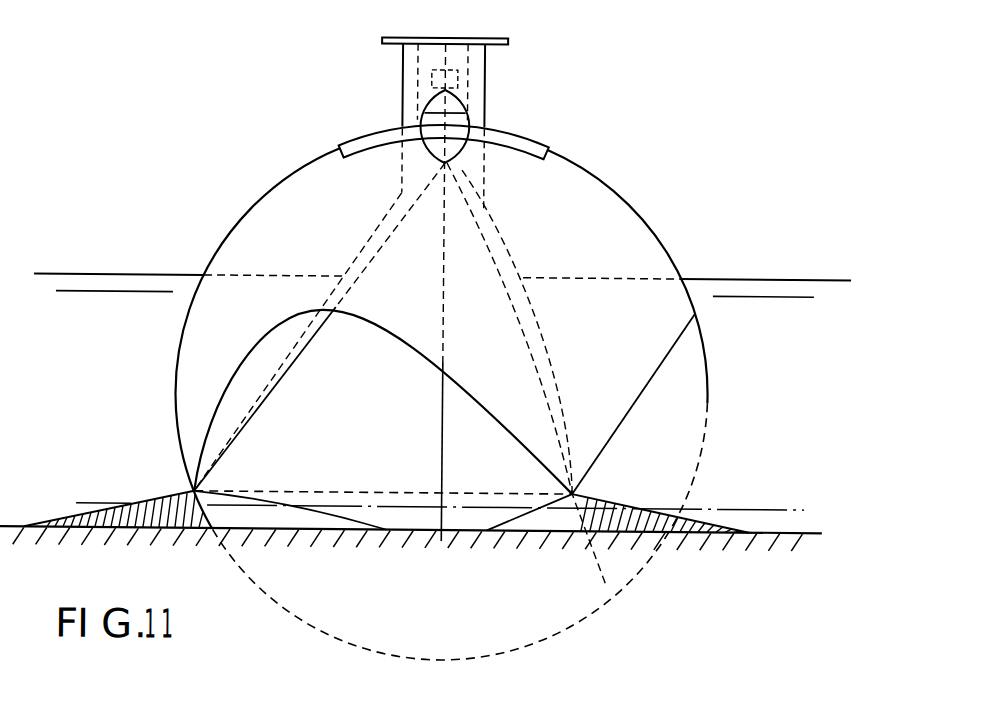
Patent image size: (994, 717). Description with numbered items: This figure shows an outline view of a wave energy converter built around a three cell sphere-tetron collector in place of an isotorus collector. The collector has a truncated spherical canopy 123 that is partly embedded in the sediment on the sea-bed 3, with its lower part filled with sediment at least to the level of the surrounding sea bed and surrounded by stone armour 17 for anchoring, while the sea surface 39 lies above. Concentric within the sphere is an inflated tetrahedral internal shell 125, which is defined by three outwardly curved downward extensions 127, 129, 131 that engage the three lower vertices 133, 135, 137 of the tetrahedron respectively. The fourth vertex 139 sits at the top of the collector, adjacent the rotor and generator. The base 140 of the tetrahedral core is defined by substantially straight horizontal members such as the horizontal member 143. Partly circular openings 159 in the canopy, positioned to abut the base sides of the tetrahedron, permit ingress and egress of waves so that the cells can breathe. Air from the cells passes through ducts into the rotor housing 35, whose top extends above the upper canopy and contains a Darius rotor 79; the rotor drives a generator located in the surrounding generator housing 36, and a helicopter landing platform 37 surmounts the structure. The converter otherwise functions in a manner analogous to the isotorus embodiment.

The sea-bed 3 is at (762, 530).
The stone armour 17 is at (132, 506).
The rotor housing 35 is at (483, 119).
The generator housing 36 is at (483, 82).
The helicopter landing platform 37 is at (503, 41).
The sea surface 39 is at (727, 278).
The Darius rotor 79 is at (423, 109).
The truncated spherical canopy 123 is at (611, 184).
The inflated tetrahedral internal shell 125 is at (388, 268).
The outwardly curved downward extension 127 is at (441, 433).
The outwardly curved downward extension 129 is at (290, 357).
The outwardly curved downward extension 131 is at (520, 344).
The lower vertex 133 is at (447, 491).
The lower vertex 135 is at (200, 490).
The lower vertex 137 is at (577, 494).
The fourth vertex 139 is at (453, 137).
The base of the tetrahedral core 140 is at (484, 497).
The substantially straight horizontal member 143 is at (390, 497).
The partly circular opening 159 is at (385, 338).